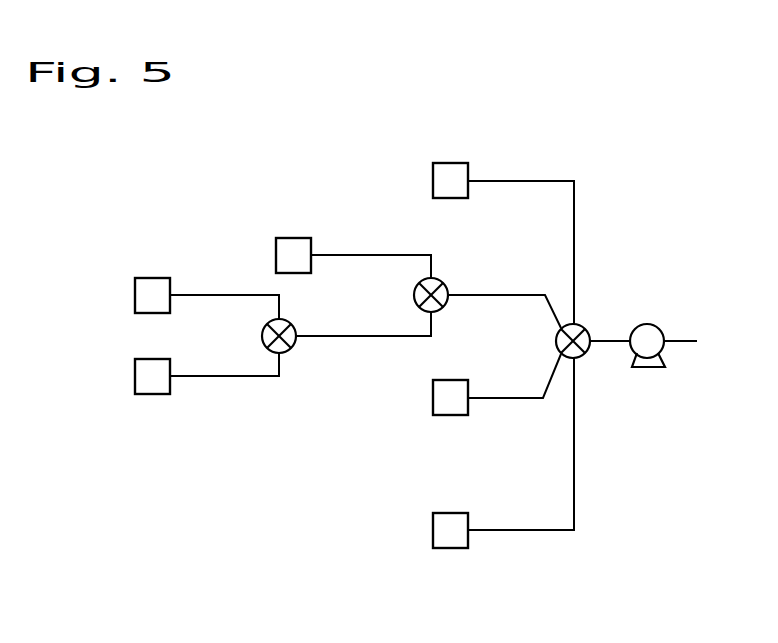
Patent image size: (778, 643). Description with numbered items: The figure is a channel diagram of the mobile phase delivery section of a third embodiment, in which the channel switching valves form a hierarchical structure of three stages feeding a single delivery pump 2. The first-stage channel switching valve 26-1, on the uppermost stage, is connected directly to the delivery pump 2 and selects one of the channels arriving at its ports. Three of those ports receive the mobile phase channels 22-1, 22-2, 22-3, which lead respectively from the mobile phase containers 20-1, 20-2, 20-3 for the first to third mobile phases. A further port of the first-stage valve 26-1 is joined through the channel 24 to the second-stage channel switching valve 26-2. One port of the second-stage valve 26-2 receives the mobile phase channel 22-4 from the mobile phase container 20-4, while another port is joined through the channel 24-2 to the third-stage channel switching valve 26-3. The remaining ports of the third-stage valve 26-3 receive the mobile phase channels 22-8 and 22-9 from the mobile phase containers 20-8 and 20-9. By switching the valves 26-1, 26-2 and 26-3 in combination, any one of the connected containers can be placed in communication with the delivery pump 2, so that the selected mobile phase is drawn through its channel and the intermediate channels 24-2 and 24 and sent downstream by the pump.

The delivery pump 2 is at (658, 328).
The mobile phase container 20-1 is at (459, 163).
The mobile phase container 20-2 is at (441, 417).
The mobile phase container 20-3 is at (443, 550).
The mobile phase container 20-4 is at (294, 237).
The mobile phase container 20-8 is at (134, 292).
The mobile phase container 20-9 is at (133, 363).
The mobile phase channel 22-1 is at (537, 180).
The mobile phase channel 22-2 is at (485, 400).
The mobile phase channel 22-3 is at (483, 533).
The mobile phase channel 22-4 is at (350, 253).
The mobile phase channel 22-8 is at (197, 293).
The mobile phase channel 22-9 is at (200, 375).
The channel 24 is at (482, 297).
The channel 24-2 is at (333, 334).
The first-stage channel switching valve 26-1 is at (586, 328).
The second-stage channel switching valve 26-2 is at (441, 280).
The third-stage channel switching valve 26-3 is at (291, 349).